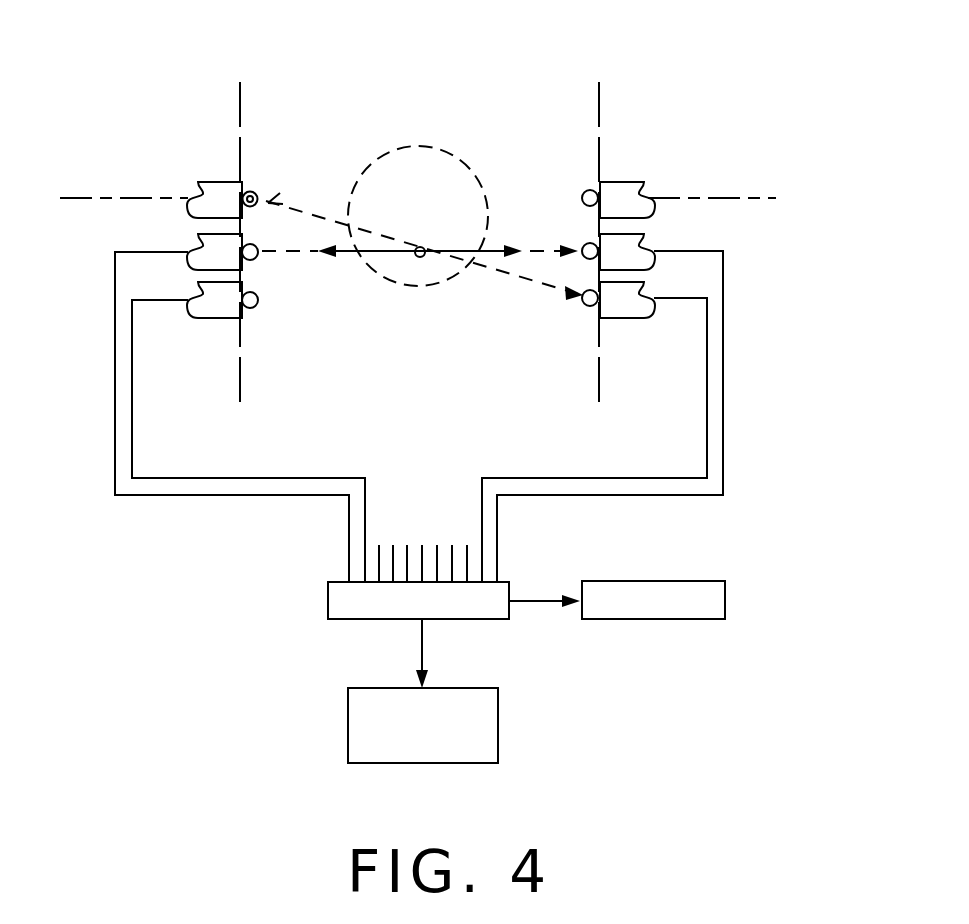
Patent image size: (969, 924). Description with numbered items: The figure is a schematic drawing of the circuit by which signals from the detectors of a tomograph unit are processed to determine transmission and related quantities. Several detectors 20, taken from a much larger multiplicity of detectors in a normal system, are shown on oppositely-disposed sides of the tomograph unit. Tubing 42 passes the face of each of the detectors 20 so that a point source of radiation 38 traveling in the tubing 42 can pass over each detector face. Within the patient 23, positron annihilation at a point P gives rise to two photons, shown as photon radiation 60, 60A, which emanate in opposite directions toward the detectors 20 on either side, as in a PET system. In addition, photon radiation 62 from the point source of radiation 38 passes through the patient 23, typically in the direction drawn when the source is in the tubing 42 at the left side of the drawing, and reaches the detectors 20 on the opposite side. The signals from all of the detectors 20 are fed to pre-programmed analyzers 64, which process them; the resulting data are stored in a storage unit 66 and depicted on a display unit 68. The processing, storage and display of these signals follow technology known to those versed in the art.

The detectors 20 is at (208, 182).
The patient 23 is at (423, 146).
The point source of radiation 38 is at (240, 165).
The tubing 42 is at (247, 190).
The photon radiation 60 is at (357, 246).
The photon radiation 60A is at (490, 245).
The photon radiation from point source 62 is at (270, 202).
The pre-programmed analyzers 64 is at (328, 606).
The storage unit 66 is at (498, 738).
The display unit 68 is at (636, 620).